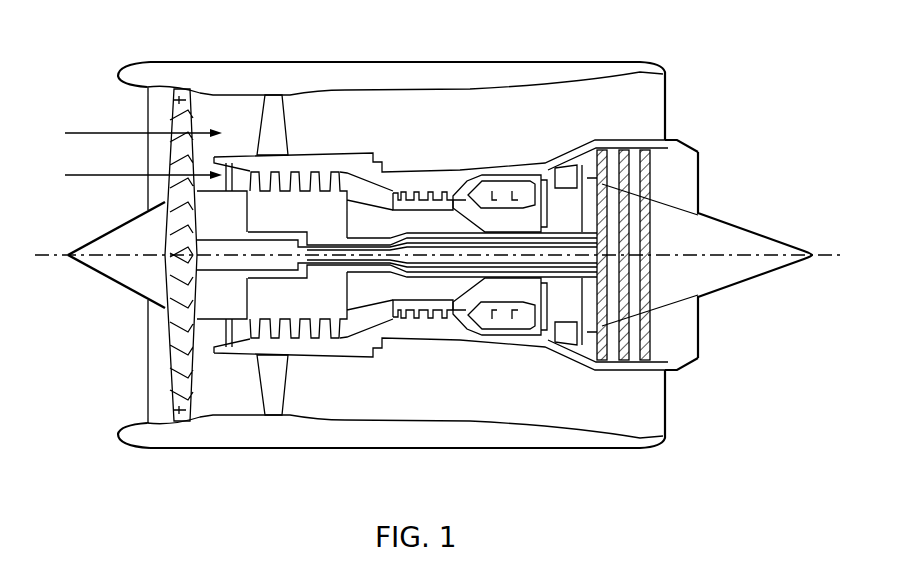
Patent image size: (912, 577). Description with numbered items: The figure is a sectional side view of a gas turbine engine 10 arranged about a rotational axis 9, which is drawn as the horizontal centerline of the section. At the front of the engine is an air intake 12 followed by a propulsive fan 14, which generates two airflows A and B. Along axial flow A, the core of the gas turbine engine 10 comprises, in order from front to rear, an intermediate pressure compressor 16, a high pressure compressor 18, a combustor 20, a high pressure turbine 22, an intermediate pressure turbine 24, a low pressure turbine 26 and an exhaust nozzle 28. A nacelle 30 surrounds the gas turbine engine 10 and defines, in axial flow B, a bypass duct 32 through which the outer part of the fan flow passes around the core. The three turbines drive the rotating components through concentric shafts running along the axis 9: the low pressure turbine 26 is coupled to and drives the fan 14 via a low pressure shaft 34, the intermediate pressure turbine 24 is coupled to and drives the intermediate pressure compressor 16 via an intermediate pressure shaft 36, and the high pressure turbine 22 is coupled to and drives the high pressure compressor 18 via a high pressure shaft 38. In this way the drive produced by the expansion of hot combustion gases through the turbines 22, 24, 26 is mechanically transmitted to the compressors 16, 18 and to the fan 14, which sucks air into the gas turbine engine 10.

The rotational axis 9 is at (697, 260).
The gas turbine engine 10 is at (108, 62).
The air intake 12 is at (158, 120).
The propulsive fan 14 is at (175, 88).
The intermediate pressure compressor 16 is at (300, 207).
The high pressure compressor 18 is at (413, 192).
The combustor 20 is at (505, 188).
The high pressure turbine 22 is at (548, 165).
The intermediate pressure turbine 24 is at (590, 182).
The low pressure turbine 26 is at (677, 155).
The exhaust nozzle 28 is at (676, 170).
The nacelle 30 is at (274, 88).
The bypass duct 32 is at (457, 125).
The low pressure shaft 34 is at (212, 263).
The intermediate pressure shaft 36 is at (338, 277).
The high pressure shaft 38 is at (417, 278).
The axial flow A is at (136, 174).
The axial flow B is at (136, 133).